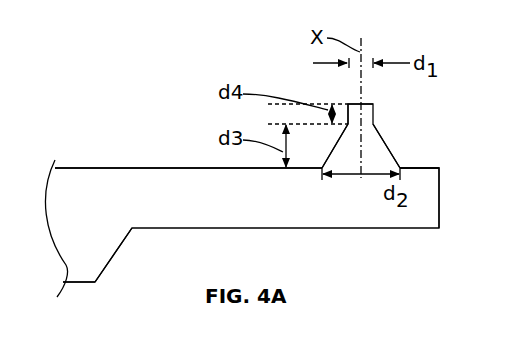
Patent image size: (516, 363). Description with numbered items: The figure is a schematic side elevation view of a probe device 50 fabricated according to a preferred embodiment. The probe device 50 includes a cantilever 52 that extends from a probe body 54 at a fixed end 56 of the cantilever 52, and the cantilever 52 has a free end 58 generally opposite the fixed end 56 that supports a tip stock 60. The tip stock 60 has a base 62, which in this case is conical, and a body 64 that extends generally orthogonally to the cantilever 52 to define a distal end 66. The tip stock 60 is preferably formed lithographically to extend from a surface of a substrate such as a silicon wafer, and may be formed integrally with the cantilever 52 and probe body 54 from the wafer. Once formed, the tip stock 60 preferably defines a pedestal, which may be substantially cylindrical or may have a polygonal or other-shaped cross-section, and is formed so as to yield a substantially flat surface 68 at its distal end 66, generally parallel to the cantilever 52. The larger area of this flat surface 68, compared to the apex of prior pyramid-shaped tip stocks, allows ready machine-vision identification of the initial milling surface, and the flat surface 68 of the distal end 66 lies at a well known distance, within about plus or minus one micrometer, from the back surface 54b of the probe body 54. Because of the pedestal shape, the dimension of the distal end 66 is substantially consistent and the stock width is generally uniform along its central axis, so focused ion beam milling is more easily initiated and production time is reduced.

The probe device 50 is at (319, 131).
The cantilever 52 is at (393, 229).
The probe body 54 is at (115, 175).
The back surface 54b is at (87, 290).
The fixed end 56 is at (136, 234).
The free end 58 is at (447, 172).
The tip stock 60 is at (385, 115).
The base 62 is at (403, 164).
The body 64 is at (374, 144).
The distal end 66 is at (345, 103).
The flat surface 68 is at (368, 104).